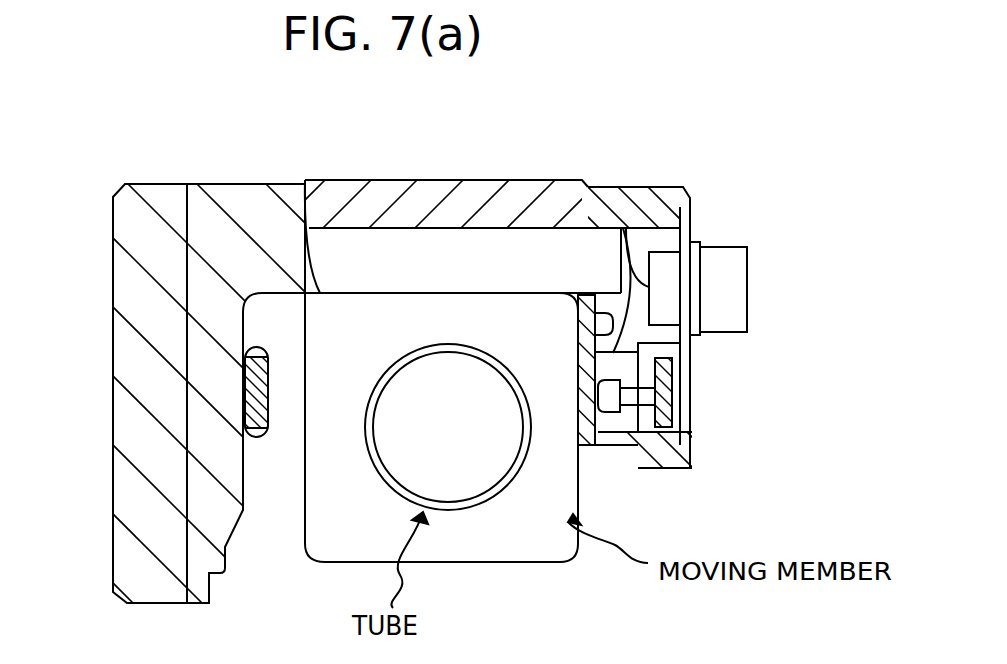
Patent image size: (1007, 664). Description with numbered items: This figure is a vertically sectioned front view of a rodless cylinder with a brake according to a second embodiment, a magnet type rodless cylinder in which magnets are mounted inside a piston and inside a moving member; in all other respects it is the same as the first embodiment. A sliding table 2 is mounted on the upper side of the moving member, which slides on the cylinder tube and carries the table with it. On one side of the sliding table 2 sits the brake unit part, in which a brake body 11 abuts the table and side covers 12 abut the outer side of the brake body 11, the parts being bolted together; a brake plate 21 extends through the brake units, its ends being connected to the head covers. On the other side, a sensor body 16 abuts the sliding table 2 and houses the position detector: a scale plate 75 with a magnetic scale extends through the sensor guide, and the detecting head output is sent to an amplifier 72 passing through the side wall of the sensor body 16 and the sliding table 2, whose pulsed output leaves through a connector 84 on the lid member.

The sliding table 2 is at (513, 195).
The brake body 11 is at (262, 185).
The side cover 12 is at (127, 297).
The sensor body 16 is at (668, 197).
The brake plate 21 is at (255, 437).
The amplifier 72 is at (420, 247).
The scale plate 75 is at (665, 402).
The connector 84 is at (727, 272).